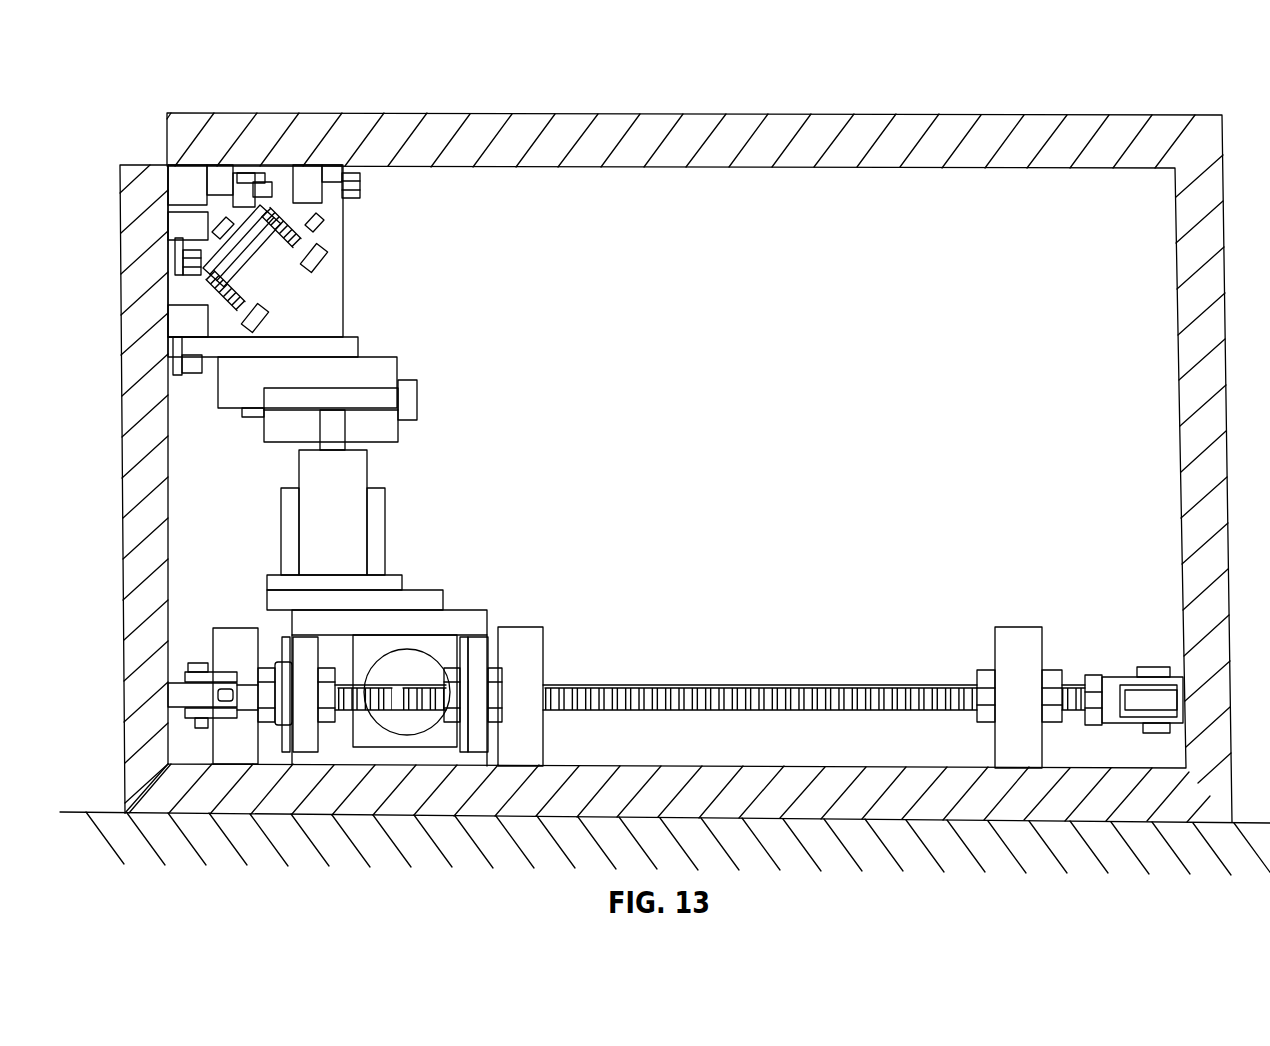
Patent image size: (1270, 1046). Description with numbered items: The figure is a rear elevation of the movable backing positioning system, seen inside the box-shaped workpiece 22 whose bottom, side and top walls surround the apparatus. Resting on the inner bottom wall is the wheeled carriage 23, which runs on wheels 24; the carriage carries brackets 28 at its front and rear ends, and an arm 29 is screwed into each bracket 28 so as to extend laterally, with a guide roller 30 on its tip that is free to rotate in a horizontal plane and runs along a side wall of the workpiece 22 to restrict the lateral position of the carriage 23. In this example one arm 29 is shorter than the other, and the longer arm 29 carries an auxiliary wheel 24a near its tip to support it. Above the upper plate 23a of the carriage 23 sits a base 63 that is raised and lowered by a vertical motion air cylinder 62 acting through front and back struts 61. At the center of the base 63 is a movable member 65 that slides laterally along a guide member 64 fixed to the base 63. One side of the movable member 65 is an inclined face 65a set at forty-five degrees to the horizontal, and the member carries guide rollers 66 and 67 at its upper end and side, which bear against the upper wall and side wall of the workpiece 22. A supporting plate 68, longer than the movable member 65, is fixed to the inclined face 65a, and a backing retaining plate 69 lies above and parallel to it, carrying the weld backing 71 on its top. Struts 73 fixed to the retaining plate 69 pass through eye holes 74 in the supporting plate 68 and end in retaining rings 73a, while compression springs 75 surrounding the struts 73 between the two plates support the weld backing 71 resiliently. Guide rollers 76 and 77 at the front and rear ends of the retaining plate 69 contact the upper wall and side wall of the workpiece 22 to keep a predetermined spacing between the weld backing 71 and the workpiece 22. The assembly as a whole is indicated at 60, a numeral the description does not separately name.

The box-shaped workpiece 22 is at (782, 132).
The wheeled carriage 23 is at (403, 643).
The upper plate 23a is at (423, 620).
The wheels 24 is at (215, 643).
The auxiliary wheel 24a is at (1018, 645).
The brackets 28 is at (290, 660).
The arm 29 is at (812, 690).
The guide roller 30 is at (180, 695).
The mirror unit 60 is at (610, 430).
The front and back struts 61 is at (375, 507).
The vertical motion air cylinder 62 is at (358, 470).
The base 63 is at (388, 402).
The guide member 64 is at (410, 380).
The movable member 65 is at (343, 306).
The inclined face 65a is at (322, 228).
The guide roller 66 is at (312, 170).
The guide roller 67 is at (173, 325).
The supporting plate 68 is at (294, 276).
The backing retaining plate 69 is at (168, 250).
The weld backing 71 is at (192, 178).
The struts 73 is at (308, 177).
The retaining ring 73a is at (330, 255).
The eye hole 74 is at (362, 188).
The compression springs 75 is at (337, 175).
The guide roller 76 is at (223, 177).
The guide roller 77 is at (173, 230).